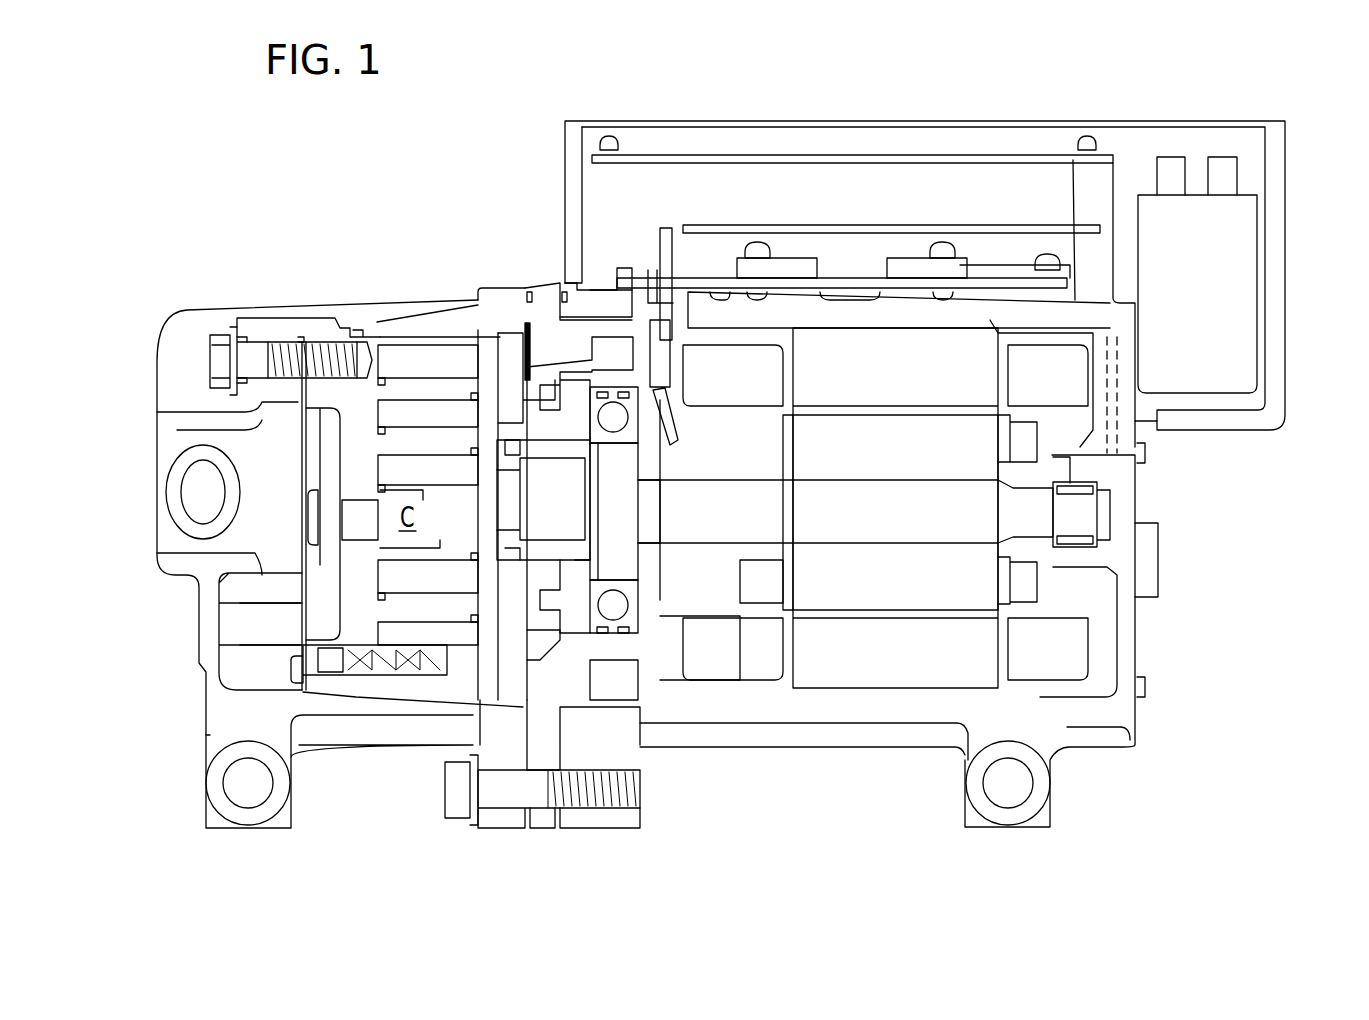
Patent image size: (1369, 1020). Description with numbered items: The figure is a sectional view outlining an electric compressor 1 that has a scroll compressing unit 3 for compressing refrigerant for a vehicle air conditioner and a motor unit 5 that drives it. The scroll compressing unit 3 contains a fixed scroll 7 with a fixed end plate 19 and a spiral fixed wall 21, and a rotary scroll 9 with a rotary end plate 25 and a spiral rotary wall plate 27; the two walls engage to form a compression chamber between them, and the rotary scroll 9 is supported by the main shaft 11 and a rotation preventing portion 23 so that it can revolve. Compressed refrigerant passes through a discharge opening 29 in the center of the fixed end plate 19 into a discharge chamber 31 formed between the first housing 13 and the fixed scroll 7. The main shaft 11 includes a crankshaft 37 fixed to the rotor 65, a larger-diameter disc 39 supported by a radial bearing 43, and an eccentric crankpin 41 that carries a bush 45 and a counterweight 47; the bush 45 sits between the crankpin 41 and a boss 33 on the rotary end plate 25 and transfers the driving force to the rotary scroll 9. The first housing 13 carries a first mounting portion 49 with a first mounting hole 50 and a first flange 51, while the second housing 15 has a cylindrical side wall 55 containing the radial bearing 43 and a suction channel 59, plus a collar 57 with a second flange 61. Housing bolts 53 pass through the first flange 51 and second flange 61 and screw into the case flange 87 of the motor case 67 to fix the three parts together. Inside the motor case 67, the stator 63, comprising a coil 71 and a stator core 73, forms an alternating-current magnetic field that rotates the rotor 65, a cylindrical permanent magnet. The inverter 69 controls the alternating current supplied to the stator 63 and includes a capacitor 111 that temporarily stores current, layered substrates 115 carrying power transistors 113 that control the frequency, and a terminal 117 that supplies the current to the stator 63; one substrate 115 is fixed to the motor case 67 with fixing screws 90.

The electric compressor 1 is at (247, 160).
The scroll compressing unit 3 is at (413, 250).
The motor unit 5 is at (1240, 552).
The fixed scroll 7 is at (338, 428).
The rotary scroll 9 is at (430, 336).
The main shaft 11 is at (733, 470).
The first housing 13 is at (318, 304).
The second housing 15 is at (552, 283).
The fixed end plate 19 is at (345, 615).
The fixed wall 21 is at (428, 645).
The rotation preventing portion 23 is at (497, 372).
The rotary end plate 25 is at (502, 665).
The rotary wall plate 27 is at (401, 385).
The discharge opening 29 is at (348, 518).
The discharge chamber 31 is at (262, 478).
The boss 33 is at (535, 575).
The crankshaft 37 is at (862, 535).
The disc 39 is at (633, 488).
The crankpin 41 is at (498, 490).
The radial bearing 43 is at (610, 633).
The bush 45 is at (582, 538).
The counterweight 47 is at (580, 565).
The first mounting portion 49 is at (208, 737).
The first mounting hole 50 is at (247, 785).
The first flange 51 is at (505, 822).
The housing bolts 53 is at (460, 820).
The side wall 55 is at (620, 695).
The collar 57 is at (542, 330).
The suction channel 59 is at (607, 345).
The second flange 61 is at (548, 822).
The stator 63 is at (838, 792).
The rotor 65 is at (916, 598).
The motor case 67 is at (1138, 645).
The inverter 69 is at (766, 110).
The coil 71 is at (748, 678).
The stator core 73 is at (822, 678).
The case flange 87 is at (598, 822).
The fixing screws 90 is at (757, 242).
The capacitor 111 is at (1248, 258).
The power transistors 113 is at (793, 262).
The substrates 115 is at (957, 158).
The terminal 117 is at (665, 232).